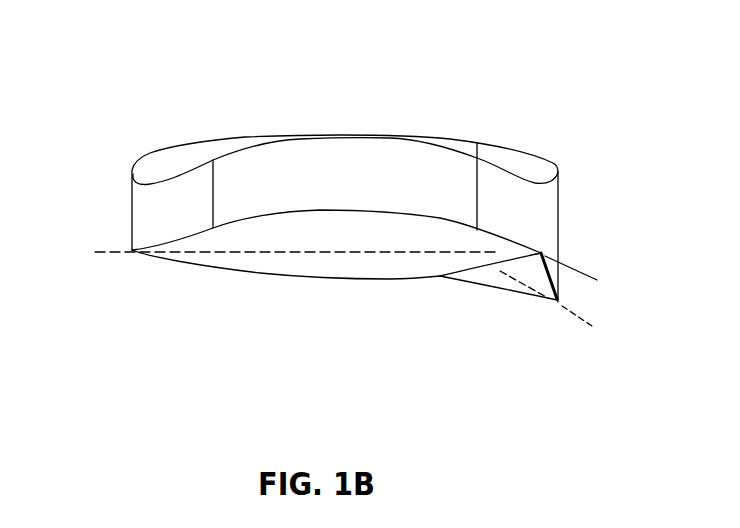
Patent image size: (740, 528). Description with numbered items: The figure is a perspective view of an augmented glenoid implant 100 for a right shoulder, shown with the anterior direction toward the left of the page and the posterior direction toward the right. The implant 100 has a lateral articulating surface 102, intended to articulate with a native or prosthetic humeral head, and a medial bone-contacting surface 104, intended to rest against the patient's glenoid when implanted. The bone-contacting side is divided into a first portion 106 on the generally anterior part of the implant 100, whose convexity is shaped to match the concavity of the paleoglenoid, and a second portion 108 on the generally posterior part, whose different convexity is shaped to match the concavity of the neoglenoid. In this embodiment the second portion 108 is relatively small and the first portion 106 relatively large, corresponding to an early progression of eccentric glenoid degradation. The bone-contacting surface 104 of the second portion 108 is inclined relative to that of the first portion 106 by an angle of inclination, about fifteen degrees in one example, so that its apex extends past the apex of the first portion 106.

The glenoid implant 100 is at (149, 105).
The lateral articulating surface 102 is at (477, 142).
The medial bone-contacting surface 104 is at (265, 307).
The first portion 106 is at (350, 268).
The second portion 108 is at (493, 288).